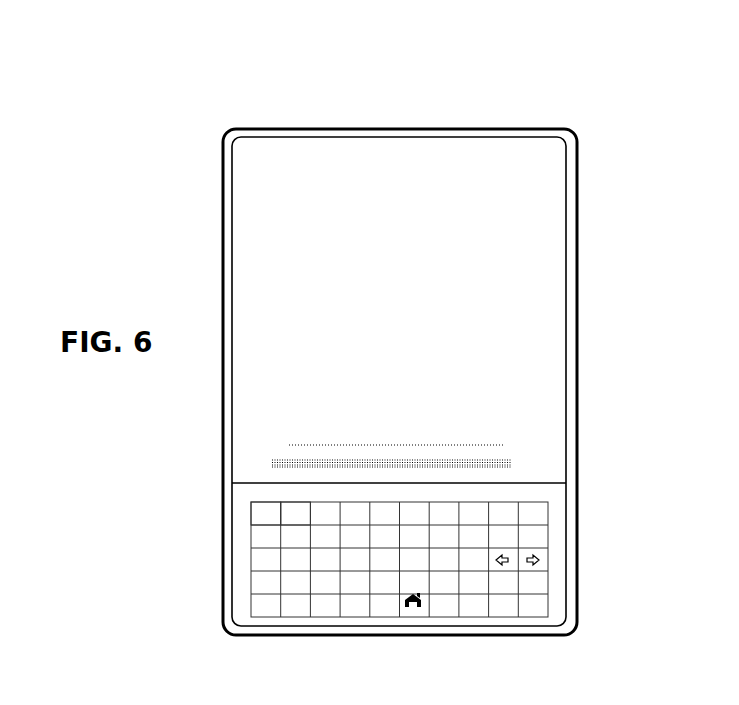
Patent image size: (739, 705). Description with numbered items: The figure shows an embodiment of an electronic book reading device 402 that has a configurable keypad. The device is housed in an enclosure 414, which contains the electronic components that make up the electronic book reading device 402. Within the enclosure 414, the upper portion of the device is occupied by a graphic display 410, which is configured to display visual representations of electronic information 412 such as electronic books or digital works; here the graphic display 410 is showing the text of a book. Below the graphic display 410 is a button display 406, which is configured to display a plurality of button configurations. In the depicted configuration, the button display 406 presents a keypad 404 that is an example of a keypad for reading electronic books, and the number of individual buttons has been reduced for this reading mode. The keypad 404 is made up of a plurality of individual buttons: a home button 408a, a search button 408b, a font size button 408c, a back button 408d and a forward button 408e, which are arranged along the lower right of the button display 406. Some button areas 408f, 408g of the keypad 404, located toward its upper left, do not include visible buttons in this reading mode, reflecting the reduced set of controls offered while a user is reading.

The electronic book reading device 402 is at (136, 77).
The keypad 404 is at (243, 594).
The button display 406 is at (595, 490).
The home button 408a is at (413, 613).
The search button 408b is at (497, 613).
The font size button 408c is at (538, 613).
The back button 408d is at (540, 567).
The forward button 408e is at (509, 567).
The button area 408f is at (263, 512).
The button area 408g is at (303, 520).
The graphic display 410 is at (595, 132).
The electronic information 412 is at (557, 146).
The enclosure 414 is at (220, 200).